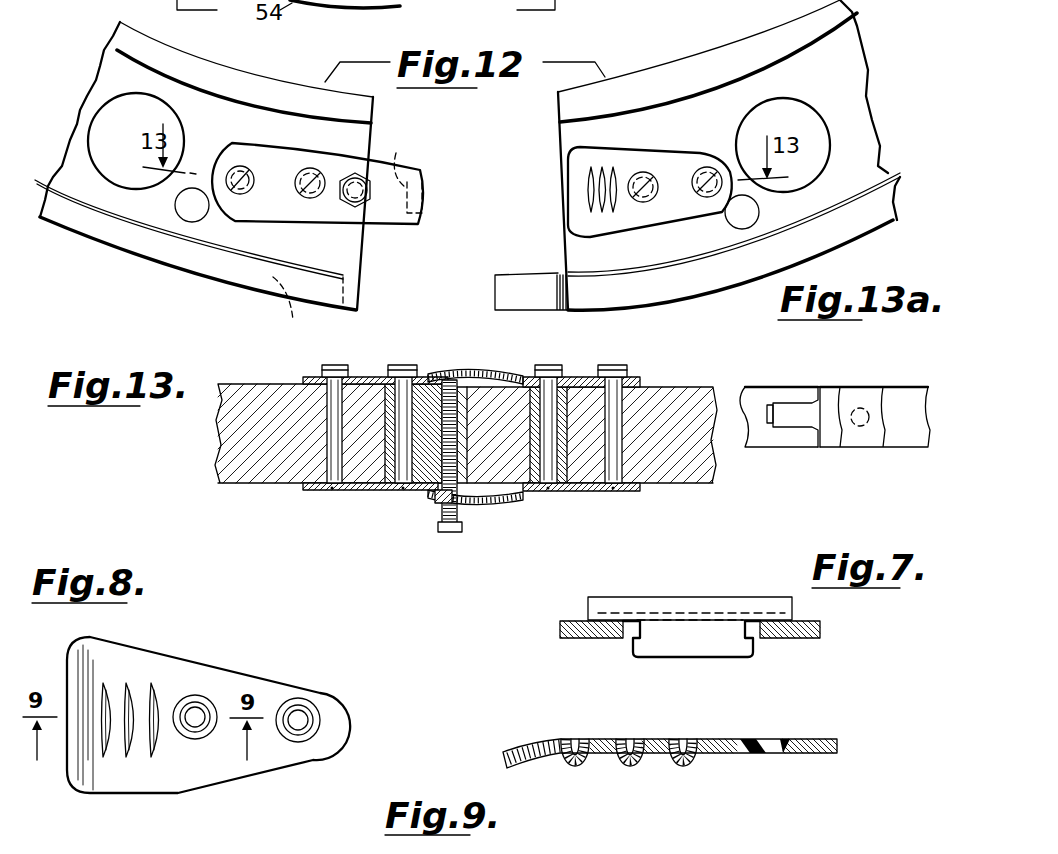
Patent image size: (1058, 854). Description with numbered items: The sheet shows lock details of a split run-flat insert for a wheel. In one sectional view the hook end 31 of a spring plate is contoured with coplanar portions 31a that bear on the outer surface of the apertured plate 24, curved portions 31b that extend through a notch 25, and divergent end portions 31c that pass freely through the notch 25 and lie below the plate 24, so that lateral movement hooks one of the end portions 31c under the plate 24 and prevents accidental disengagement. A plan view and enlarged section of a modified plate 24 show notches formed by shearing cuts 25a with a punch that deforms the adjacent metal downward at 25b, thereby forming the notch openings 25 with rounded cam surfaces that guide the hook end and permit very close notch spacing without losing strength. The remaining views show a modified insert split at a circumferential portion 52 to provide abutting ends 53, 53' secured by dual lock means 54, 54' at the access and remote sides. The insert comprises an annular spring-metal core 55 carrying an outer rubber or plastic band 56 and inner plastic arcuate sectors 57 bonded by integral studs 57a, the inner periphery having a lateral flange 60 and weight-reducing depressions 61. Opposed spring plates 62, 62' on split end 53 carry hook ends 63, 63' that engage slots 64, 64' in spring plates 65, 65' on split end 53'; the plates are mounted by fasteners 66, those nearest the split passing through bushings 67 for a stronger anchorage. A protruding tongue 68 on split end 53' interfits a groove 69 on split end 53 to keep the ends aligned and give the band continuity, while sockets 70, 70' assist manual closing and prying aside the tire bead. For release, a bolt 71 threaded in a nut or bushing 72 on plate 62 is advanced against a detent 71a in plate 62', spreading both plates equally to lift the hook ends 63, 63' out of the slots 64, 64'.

In FIG. 7, the spring plate 24 is at (560, 630).
In FIG. 8, the spring plate 24 is at (266, 758).
In FIG. 9, the spring plate 24 is at (800, 755).
In FIG. 7, the notch 25 is at (633, 642).
In FIG. 8, the notch 25 is at (163, 692).
In FIG. 9, the notch 25 is at (578, 745).
In FIG. 8, the cut 25a is at (150, 758).
In FIG. 9, the cut 25a is at (572, 742).
In FIG. 9, the deformed metal 25b is at (692, 768).
In FIG. 7, the hook end 31 is at (680, 597).
In FIG. 7, the coplanar portions 31a is at (598, 612).
In FIG. 7, the curved portions 31b is at (722, 636).
In FIG. 7, the divergent end portions 31c is at (630, 657).
In FIG. 13, the split 52 is at (444, 370).
In FIG. 12, the split end 53 is at (206, 166).
In FIG. 13, the split end 53 is at (328, 433).
In FIG. 13A, the split end 53' is at (629, 85).
In FIG. 13, the split end 53' is at (592, 435).
In FIG. 13, the lock means 54 is at (406, 530).
In FIG. 13, the lock means 54' is at (475, 356).
In FIG. 12, the core or band 55 is at (48, 176).
In FIG. 13A, the core or band 55 is at (900, 172).
In FIG. 13, the core or band 55 is at (852, 437).
In FIG. 12, the band 56 is at (83, 231).
In FIG. 13A, the band 56 is at (897, 222).
In FIG. 13, the band 56 is at (828, 440).
In FIG. 13, the arcuate sectors 57 is at (910, 390).
In FIG. 13, the integral studs 57a is at (862, 430).
In FIG. 13A, the lateral flange 60 is at (718, 56).
In FIG. 12, the depression or recess 61 is at (108, 102).
In FIG. 13A, the depression or recess 61 is at (785, 100).
In FIG. 12, the spring plate 62 is at (309, 172).
In FIG. 13, the spring plate 62 is at (374, 465).
In FIG. 13, the spring plate 62' is at (326, 411).
In FIG. 12, the hook end 63 is at (381, 171).
In FIG. 13, the hook end 63 is at (567, 461).
In FIG. 13, the hook end 63' is at (553, 409).
In FIG. 13A, the slot 64 is at (562, 189).
In FIG. 13, the slot 64 is at (475, 539).
In FIG. 13, the slot 64' is at (514, 351).
In FIG. 13A, the spring plate 65 is at (650, 177).
In FIG. 13, the spring plate 65 is at (581, 460).
In FIG. 13, the spring plate 65' is at (655, 359).
In FIG. 12, the fasteners 66 is at (300, 198).
In FIG. 13A, the fasteners 66 is at (680, 240).
In FIG. 13, the fasteners 66 is at (330, 490).
In FIG. 12, the bushings 67 is at (300, 172).
In FIG. 13A, the bushings 67 is at (655, 172).
In FIG. 13, the bushings 67 is at (405, 365).
In FIG. 13A, the tongue portion 68 is at (520, 275).
In FIG. 13, the tongue portion 68 is at (785, 420).
In FIG. 12, the groove 69 is at (300, 306).
In FIG. 13, the groove 69 is at (757, 410).
In FIG. 12, the socket 70 is at (171, 246).
In FIG. 13, the socket 70 is at (430, 485).
In FIG. 13A, the socket 70' is at (733, 255).
In FIG. 12, the bolt 71 is at (363, 226).
In FIG. 13, the bolt 71 is at (455, 532).
In FIG. 13, the socket or detent 71a is at (443, 372).
In FIG. 13, the nut or bushing 72 is at (433, 503).